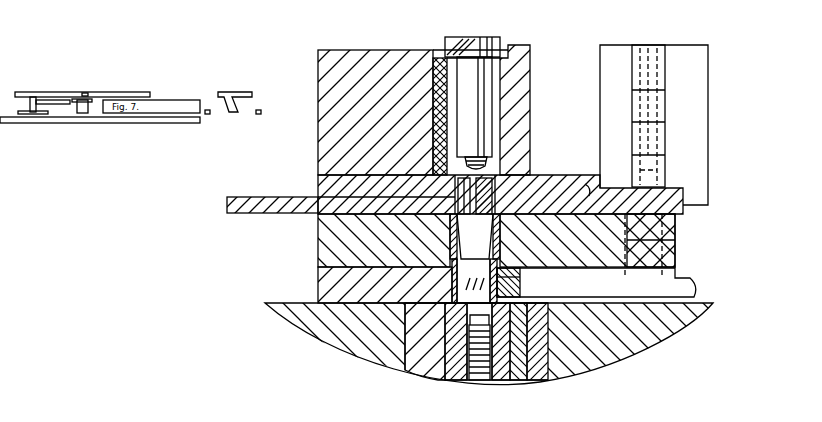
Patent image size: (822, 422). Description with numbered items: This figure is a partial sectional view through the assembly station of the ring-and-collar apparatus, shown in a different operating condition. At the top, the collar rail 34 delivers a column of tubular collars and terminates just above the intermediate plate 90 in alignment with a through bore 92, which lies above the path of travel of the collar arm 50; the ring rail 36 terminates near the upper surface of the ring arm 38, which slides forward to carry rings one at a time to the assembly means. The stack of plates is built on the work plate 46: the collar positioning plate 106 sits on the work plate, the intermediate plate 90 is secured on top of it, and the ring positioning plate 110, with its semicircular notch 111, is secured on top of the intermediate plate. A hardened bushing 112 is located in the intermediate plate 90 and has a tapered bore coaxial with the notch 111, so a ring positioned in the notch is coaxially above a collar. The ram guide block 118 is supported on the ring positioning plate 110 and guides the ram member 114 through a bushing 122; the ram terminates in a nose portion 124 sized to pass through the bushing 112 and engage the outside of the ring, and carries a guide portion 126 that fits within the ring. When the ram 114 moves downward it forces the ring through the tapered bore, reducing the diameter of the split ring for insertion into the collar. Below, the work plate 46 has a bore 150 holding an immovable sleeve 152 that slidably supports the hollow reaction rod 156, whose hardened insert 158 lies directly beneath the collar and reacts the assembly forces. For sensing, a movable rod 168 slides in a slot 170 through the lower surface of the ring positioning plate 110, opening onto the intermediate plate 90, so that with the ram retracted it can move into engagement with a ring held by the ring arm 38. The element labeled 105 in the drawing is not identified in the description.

The collar rail 34 is at (695, 77).
The ring rail 36 is at (660, 46).
The ring arm 38 is at (585, 184).
The work plate 46 is at (336, 362).
The collar arm 50 is at (697, 282).
The intermediate plate 90 is at (318, 238).
The through bore 92 is at (665, 236).
The tapered bore 105 is at (452, 236).
The collar positioning plate 106 is at (318, 280).
The ring positioning plate 110 is at (318, 182).
The semicircular notch 111 is at (455, 297).
The hardened bushing 112 is at (497, 232).
The ram member 114 is at (493, 40).
The ram guide block 118 is at (325, 123).
The bushing 122 is at (513, 77).
The nose portion 124 is at (480, 128).
The guide portion 126 is at (488, 167).
The bore 150 is at (410, 338).
The immovable sleeve 152 is at (548, 384).
The reaction rod 156 is at (489, 382).
The hardened insert 158 is at (452, 348).
The movable rod 168 is at (227, 205).
The slot 170 is at (455, 196).